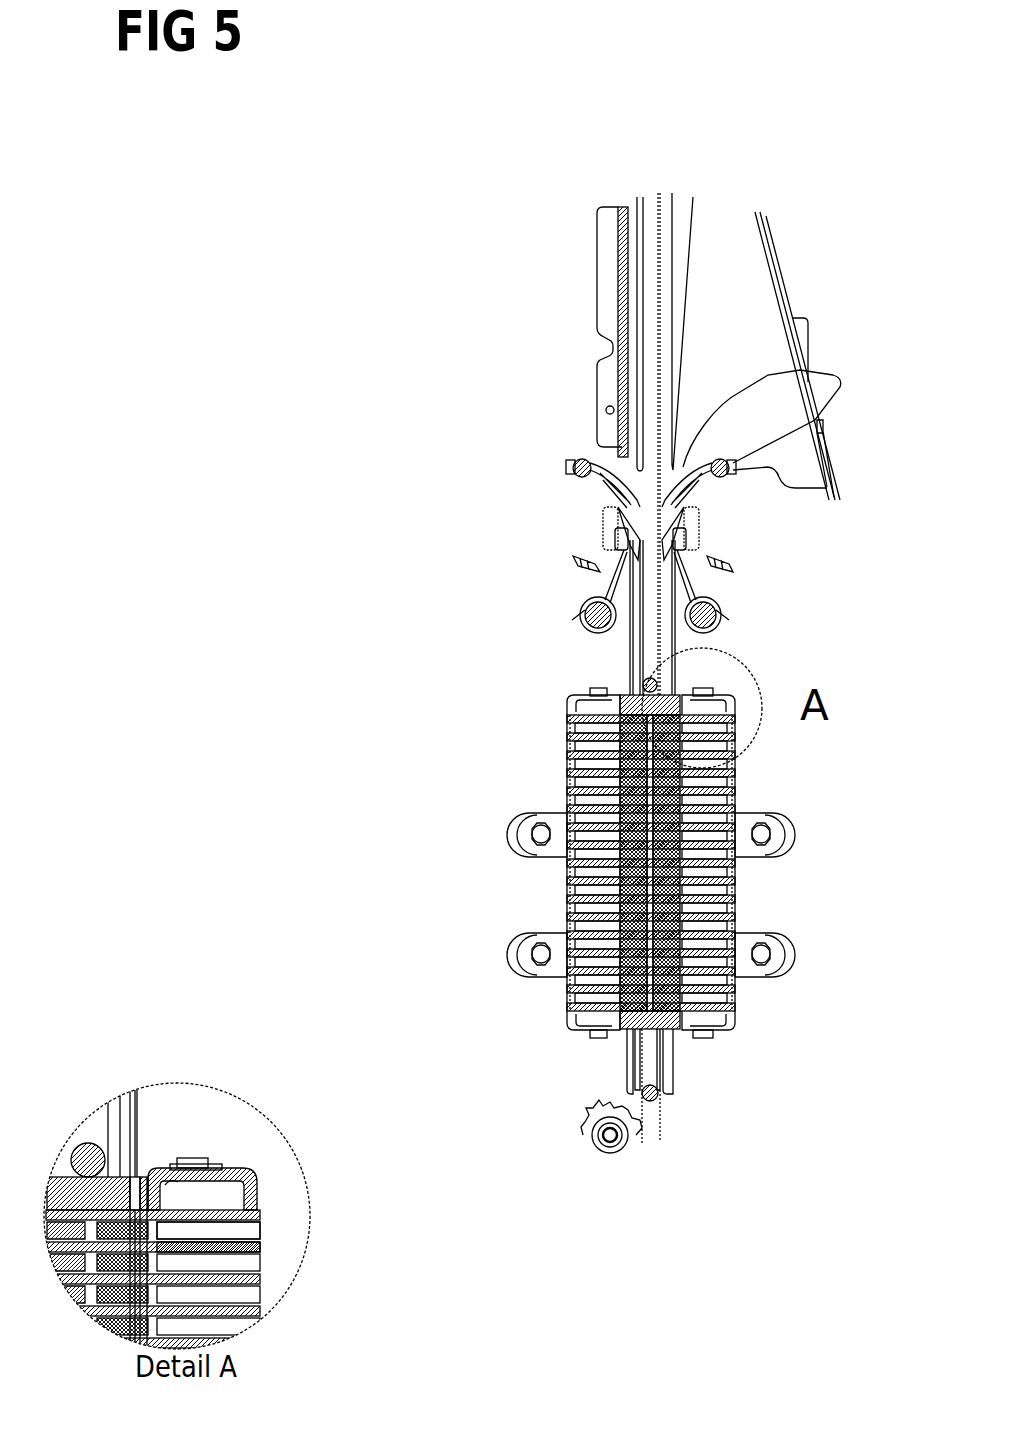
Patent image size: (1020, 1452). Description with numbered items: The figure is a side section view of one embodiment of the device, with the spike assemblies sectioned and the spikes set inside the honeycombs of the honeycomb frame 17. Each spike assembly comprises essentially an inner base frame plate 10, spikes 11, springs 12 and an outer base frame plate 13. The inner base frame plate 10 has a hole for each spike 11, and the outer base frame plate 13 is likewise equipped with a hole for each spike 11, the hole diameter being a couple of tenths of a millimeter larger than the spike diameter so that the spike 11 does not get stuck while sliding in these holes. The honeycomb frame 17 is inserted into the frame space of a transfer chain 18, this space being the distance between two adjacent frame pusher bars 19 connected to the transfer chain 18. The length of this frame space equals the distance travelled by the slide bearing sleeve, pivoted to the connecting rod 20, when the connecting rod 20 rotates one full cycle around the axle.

The inner base frame plate 10 is at (210, 1173).
The spike 11 is at (253, 1260).
The spring 12 is at (250, 1230).
The outer base frame plate 13 is at (244, 1190).
The honeycomb frame 17 is at (137, 1177).
The transfer chain 18 is at (92, 1132).
The frame pusher bar 19 is at (118, 1197).
The connecting rod 20 is at (557, 953).